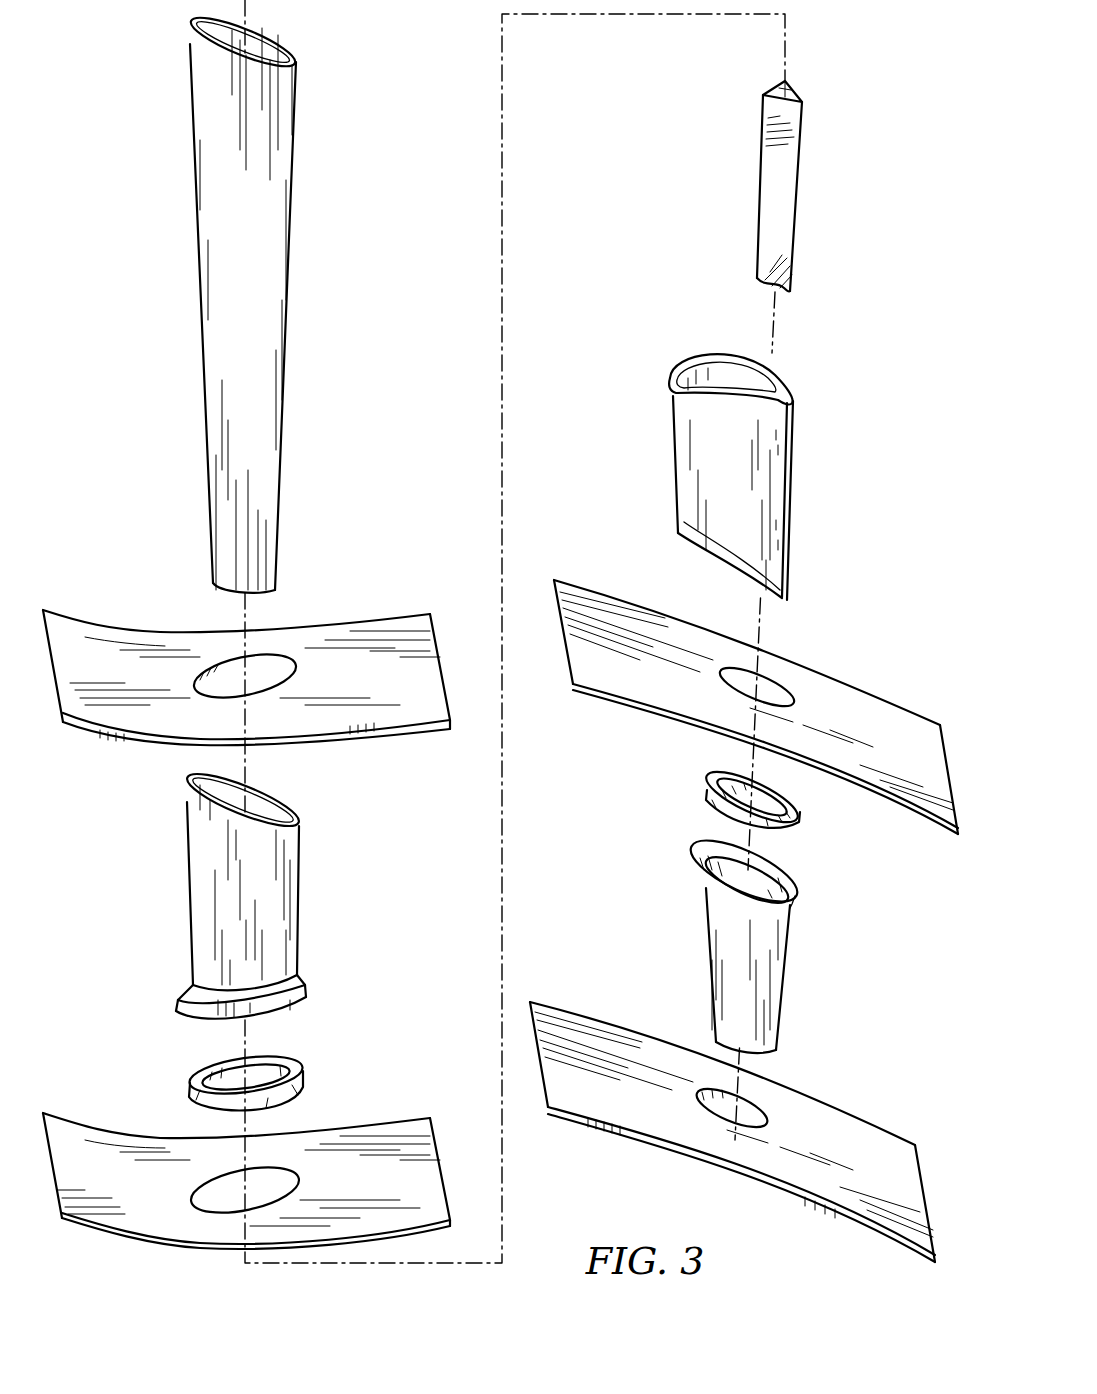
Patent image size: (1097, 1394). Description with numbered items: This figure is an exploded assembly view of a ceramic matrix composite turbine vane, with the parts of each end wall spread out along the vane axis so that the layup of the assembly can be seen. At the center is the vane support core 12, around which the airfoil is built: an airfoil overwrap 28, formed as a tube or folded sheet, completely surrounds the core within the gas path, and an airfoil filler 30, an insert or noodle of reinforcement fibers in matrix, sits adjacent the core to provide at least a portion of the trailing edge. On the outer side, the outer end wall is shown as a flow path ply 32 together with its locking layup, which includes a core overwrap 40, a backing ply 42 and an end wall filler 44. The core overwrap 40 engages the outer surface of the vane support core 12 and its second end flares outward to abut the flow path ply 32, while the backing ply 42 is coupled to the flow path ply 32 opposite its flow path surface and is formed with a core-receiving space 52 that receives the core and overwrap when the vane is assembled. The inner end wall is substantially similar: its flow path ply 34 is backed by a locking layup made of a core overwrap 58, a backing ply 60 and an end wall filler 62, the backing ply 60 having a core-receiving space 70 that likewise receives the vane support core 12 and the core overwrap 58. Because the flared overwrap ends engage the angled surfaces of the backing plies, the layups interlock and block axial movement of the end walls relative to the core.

The vane support core 12 is at (330, 126).
The airfoil overwrap 28 is at (815, 401).
The airfoil filler 30 is at (812, 170).
The flow path ply 32 is at (388, 1237).
The flow path ply 34 is at (861, 712).
The core overwrap 40 is at (184, 925).
The backing ply 42 is at (246, 642).
The end wall filler 44 is at (186, 1091).
The core-receiving space 52 is at (276, 650).
The core overwrap 58 is at (796, 931).
The backing ply 60 is at (732, 1143).
The end wall filler 62 is at (797, 791).
The core-receiving space 70 is at (768, 1106).